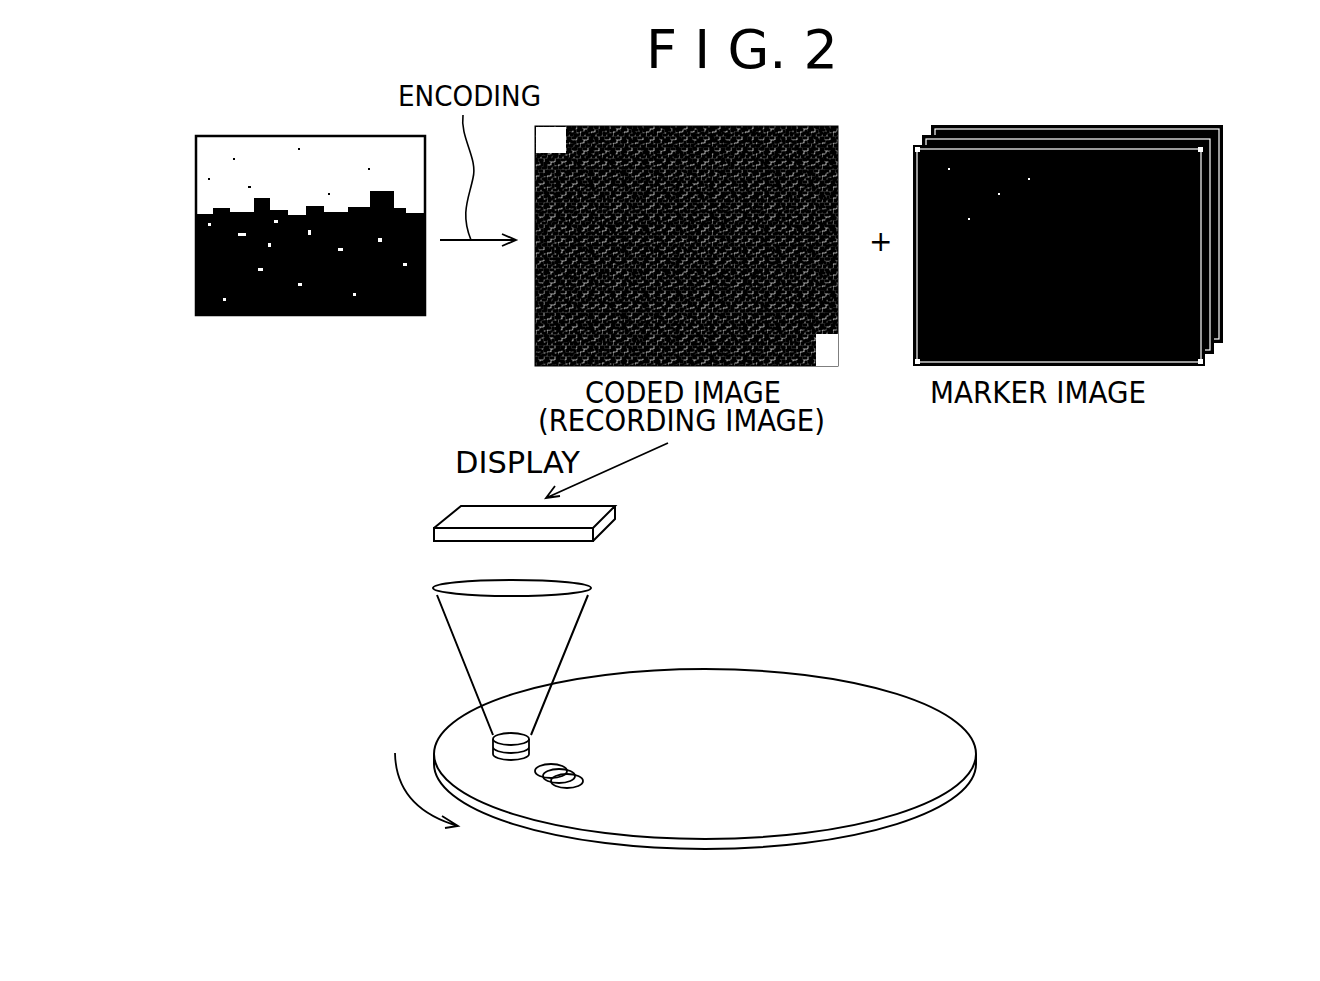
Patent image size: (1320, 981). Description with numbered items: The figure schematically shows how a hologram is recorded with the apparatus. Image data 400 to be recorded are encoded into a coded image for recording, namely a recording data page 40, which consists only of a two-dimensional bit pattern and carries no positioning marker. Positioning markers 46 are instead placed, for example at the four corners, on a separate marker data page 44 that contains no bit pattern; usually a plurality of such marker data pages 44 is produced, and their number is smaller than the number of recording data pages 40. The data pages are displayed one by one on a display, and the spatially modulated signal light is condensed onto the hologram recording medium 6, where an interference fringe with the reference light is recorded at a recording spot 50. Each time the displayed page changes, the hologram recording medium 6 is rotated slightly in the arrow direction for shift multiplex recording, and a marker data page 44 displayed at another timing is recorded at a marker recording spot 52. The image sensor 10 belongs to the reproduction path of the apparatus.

The image data 400 is at (247, 308).
The recording data page 40 is at (528, 305).
The marker data page 44 is at (1155, 358).
The markers 46 is at (1215, 118).
The image sensor 10 is at (607, 504).
The hologram recording medium 6 is at (925, 728).
The hologram recording spot 50 is at (505, 723).
The marker hologram recording spot 52 is at (563, 780).